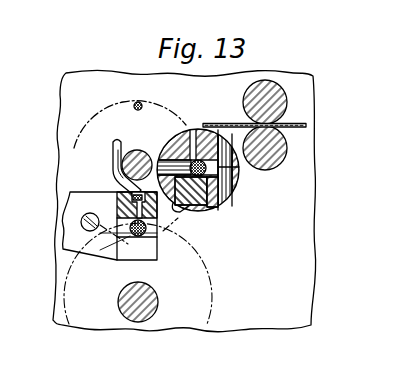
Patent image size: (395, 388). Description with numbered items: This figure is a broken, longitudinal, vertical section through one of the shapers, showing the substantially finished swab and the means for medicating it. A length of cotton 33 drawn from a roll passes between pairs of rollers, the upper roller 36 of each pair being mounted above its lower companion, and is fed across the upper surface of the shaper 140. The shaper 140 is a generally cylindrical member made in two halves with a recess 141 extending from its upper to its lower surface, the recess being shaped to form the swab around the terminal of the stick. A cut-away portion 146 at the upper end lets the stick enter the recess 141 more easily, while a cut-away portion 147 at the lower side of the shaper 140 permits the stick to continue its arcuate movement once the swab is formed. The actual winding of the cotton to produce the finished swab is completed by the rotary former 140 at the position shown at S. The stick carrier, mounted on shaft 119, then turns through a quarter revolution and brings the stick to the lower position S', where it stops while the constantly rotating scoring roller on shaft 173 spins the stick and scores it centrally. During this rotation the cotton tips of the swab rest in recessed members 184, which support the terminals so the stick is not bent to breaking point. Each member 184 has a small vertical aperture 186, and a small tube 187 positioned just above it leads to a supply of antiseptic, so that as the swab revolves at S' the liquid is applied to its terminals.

The upper roller 36 is at (275, 86).
The length of cotton 33 is at (301, 123).
The recess 141 is at (188, 128).
The shaper 140 is at (226, 193).
The cut-away portion 147 is at (228, 207).
The cut-away portion 146 is at (190, 204).
The swab forming position S is at (202, 218).
The shaft 119 is at (143, 150).
The small tube 187 is at (111, 135).
The member 184 is at (113, 191).
The scoring position S' is at (159, 261).
The small vertical aperture 186 is at (117, 207).
The shaft 173 is at (150, 309).